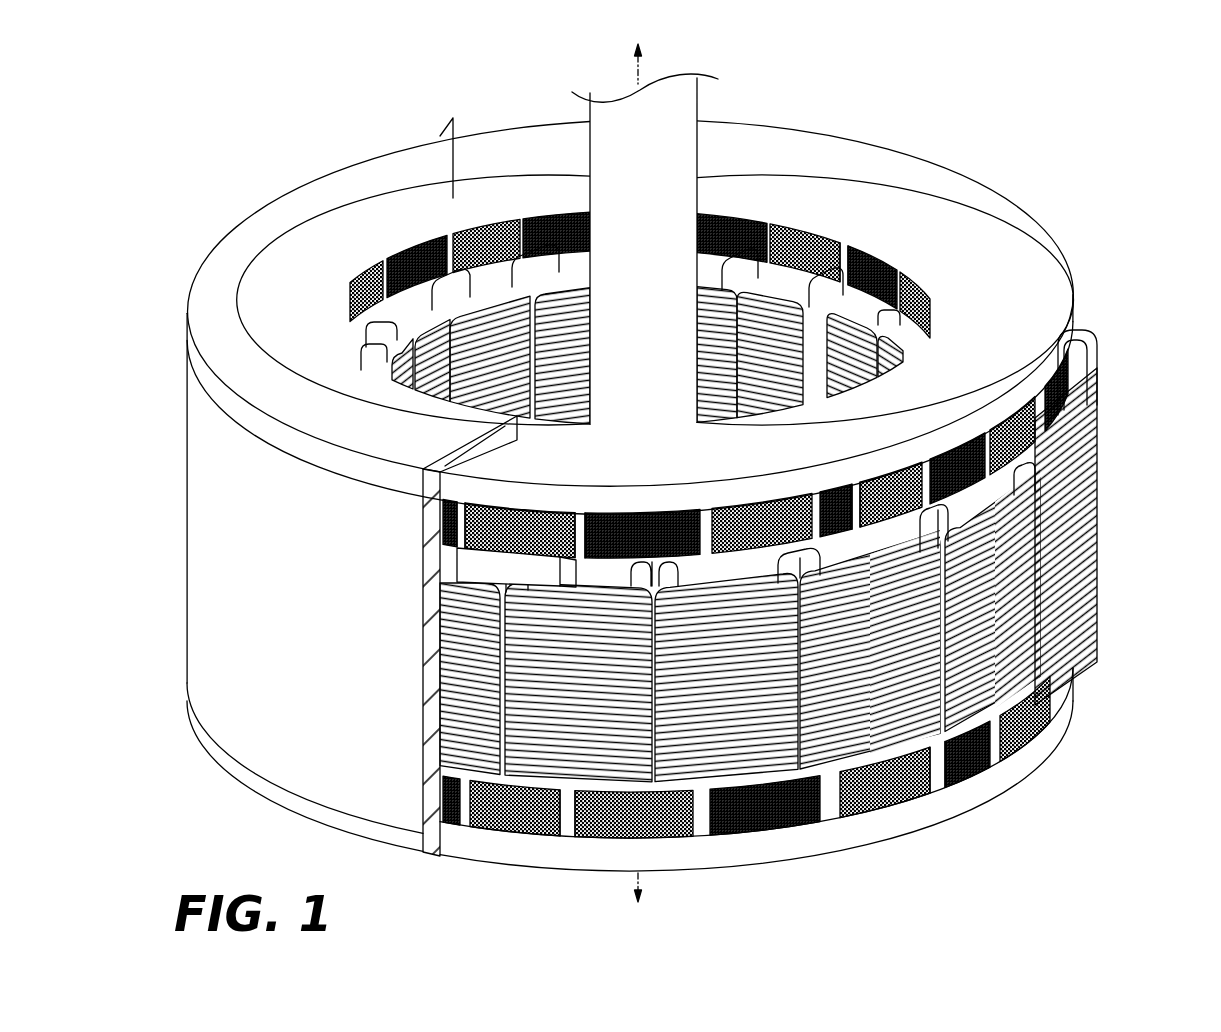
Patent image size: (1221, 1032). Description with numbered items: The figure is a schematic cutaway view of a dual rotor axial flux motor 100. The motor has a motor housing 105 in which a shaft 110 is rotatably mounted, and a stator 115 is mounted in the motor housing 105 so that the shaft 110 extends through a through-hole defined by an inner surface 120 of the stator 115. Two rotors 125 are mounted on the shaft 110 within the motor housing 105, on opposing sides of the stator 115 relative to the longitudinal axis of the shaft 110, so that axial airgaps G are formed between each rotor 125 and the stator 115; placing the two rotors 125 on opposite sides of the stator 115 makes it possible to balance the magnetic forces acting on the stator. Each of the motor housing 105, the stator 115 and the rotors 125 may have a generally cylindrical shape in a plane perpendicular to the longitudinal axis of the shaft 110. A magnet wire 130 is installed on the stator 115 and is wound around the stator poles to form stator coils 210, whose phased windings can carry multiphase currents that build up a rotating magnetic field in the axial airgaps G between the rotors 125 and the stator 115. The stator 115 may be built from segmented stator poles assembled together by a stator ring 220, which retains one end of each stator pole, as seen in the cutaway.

The dual rotor axial flux motor 100 is at (652, 474).
The motor housing 105 is at (279, 187).
The shaft 110 is at (700, 102).
The stator 115 is at (1090, 448).
The inner surface 120 is at (792, 272).
The rotors 125 is at (1020, 222).
The magnet wire 130 is at (803, 534).
The stator coils 210 is at (1092, 546).
The stator ring 220 is at (457, 548).
The axial airgaps G is at (873, 292).